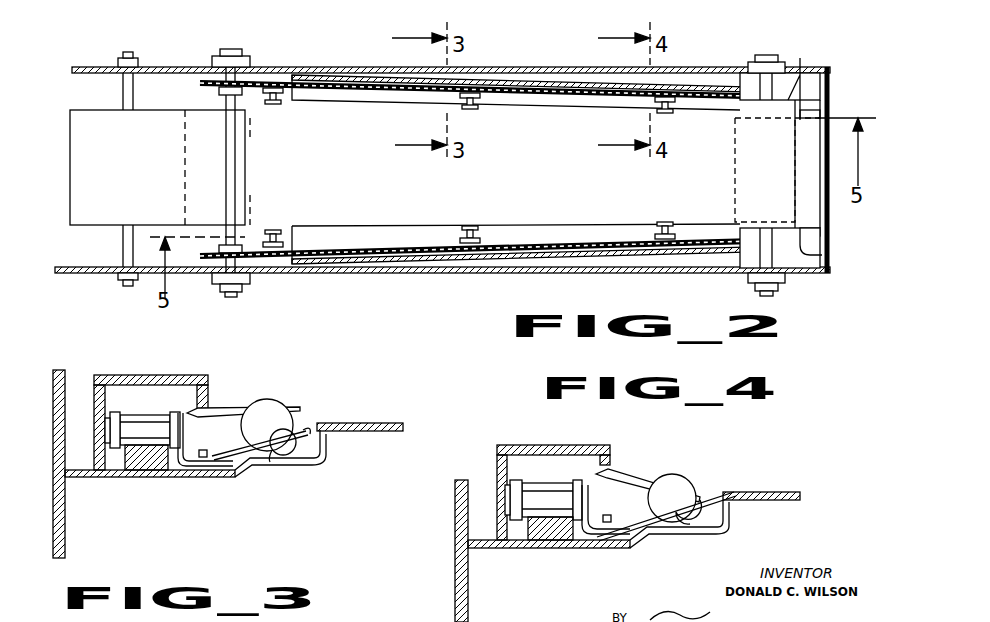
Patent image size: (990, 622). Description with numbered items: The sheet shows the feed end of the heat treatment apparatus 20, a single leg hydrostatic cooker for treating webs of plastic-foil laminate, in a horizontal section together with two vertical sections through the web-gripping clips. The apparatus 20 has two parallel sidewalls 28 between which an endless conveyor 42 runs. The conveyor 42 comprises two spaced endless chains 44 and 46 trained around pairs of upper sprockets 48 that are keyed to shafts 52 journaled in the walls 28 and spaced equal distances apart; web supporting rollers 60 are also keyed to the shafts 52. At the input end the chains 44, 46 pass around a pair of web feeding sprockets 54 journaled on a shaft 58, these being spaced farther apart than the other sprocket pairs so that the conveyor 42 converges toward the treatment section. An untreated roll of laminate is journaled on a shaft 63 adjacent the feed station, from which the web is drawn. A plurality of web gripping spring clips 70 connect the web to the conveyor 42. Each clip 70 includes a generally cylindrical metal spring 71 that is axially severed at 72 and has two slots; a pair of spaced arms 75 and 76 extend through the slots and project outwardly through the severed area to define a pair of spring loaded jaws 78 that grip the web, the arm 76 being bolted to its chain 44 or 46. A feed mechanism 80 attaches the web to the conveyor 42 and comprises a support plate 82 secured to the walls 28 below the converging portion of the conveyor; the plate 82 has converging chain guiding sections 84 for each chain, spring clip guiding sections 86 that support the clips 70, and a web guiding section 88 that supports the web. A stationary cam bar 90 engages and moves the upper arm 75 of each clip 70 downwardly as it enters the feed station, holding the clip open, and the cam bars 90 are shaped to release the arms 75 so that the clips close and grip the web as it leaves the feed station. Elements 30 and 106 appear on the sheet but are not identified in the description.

In FIG. 2, the heat treatment apparatus 20 is at (147, 50).
In FIG. 2, the sidewalls 28 is at (73, 67).
In FIG. 3, the sidewalls 28 is at (53, 381).
In FIG. 4, the sidewalls 28 is at (455, 568).
In FIG. 2, the end frame member 30 is at (832, 81).
In FIG. 3, the endless conveyor 42 is at (109, 448).
In FIG. 4, the endless conveyor 42 is at (503, 475).
In FIG. 2, the endless chain 44 is at (372, 81).
In FIG. 3, the endless chain 44 is at (136, 420).
In FIG. 4, the endless chain 44 is at (550, 490).
In FIG. 2, the endless chain 46 is at (480, 259).
In FIG. 2, the upper sprockets 48 is at (836, 258).
In FIG. 2, the shafts 52 is at (766, 55).
In FIG. 2, the web feeding sprockets 54 is at (239, 82).
In FIG. 2, the shaft 58 is at (229, 50).
In FIG. 2, the web supporting rollers 60 is at (735, 160).
In FIG. 2, the shaft 63 is at (123, 92).
In FIG. 2, the web gripping spring clips 70 is at (281, 104).
In FIG. 3, the web gripping spring clips 70 is at (266, 392).
In FIG. 4, the web gripping spring clips 70 is at (676, 469).
In FIG. 3, the cylindrical metal spring 71 is at (284, 404).
In FIG. 4, the cylindrical metal spring 71 is at (684, 490).
In FIG. 3, the severed area 72 is at (272, 456).
In FIG. 4, the severed area 72 is at (682, 516).
In FIG. 3, the upper arm 75 is at (219, 410).
In FIG. 4, the upper arm 75 is at (626, 480).
In FIG. 3, the arm 76 is at (218, 467).
In FIG. 4, the arm 76 is at (632, 544).
In FIG. 3, the spring loaded jaws 78 is at (307, 428).
In FIG. 4, the spring loaded jaws 78 is at (706, 494).
In FIG. 2, the feed mechanism 80 is at (516, 84).
In FIG. 3, the feed mechanism 80 is at (133, 367).
In FIG. 4, the feed mechanism 80 is at (556, 439).
In FIG. 2, the support plate 82 is at (379, 225).
In FIG. 3, the support plate 82 is at (361, 432).
In FIG. 4, the support plate 82 is at (790, 502).
In FIG. 3, the chain guiding sections 84 is at (144, 462).
In FIG. 4, the chain guiding sections 84 is at (543, 530).
In FIG. 3, the spring clip guiding sections 86 is at (308, 466).
In FIG. 4, the spring clip guiding sections 86 is at (731, 527).
In FIG. 3, the web guiding section 88 is at (403, 424).
In FIG. 4, the web guiding section 88 is at (800, 493).
In FIG. 3, the stationary cam bar 90 is at (210, 386).
In FIG. 4, the stationary cam bar 90 is at (611, 460).
In FIG. 2, the element 106 is at (422, 1).